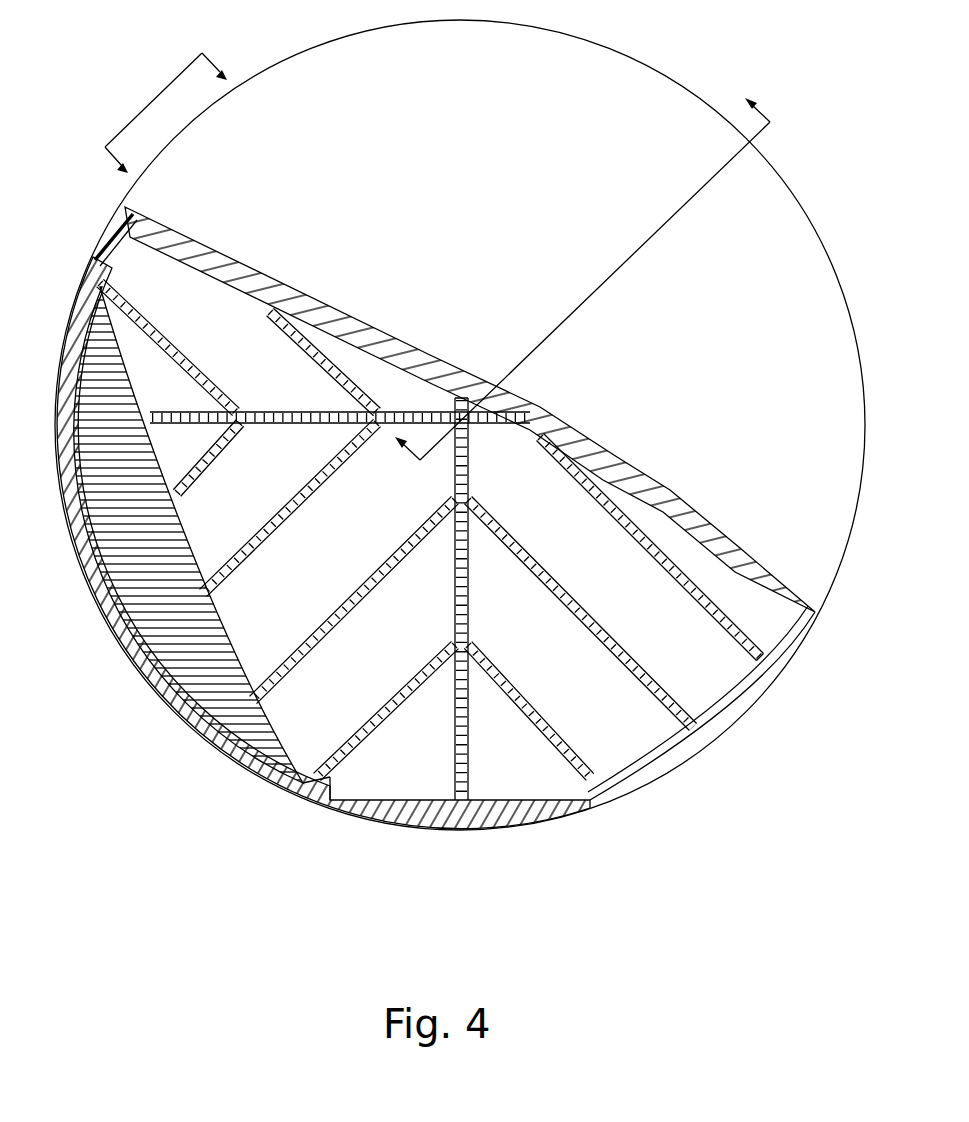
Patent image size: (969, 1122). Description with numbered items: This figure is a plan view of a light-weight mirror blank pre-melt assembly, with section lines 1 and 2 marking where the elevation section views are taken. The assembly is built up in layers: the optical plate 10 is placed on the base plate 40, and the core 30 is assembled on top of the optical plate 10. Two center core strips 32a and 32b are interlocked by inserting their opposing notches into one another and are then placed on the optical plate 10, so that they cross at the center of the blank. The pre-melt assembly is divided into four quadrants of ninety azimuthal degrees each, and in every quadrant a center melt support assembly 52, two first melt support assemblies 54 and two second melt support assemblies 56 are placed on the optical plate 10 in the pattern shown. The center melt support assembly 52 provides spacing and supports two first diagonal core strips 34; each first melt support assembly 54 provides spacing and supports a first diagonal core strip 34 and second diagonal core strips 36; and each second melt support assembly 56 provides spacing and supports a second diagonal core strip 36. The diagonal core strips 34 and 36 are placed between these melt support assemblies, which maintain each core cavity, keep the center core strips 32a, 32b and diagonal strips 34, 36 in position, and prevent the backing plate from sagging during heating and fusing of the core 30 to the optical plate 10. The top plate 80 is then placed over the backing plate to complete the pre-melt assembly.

The section line 1- 1 is at (587, 290).
The section line 2- 2 is at (158, 116).
The optical plate 10 is at (203, 687).
The core 30 is at (623, 467).
The center core strip 32a is at (460, 803).
The center core strip 32b is at (333, 418).
The first diagonal core strip 34 is at (760, 655).
The second diagonal core strip 36 is at (620, 790).
The base plate 40 is at (147, 663).
The center melt support assembly 52 is at (681, 642).
The first melt support assembly 54 is at (589, 698).
The second melt support assembly 56 is at (527, 775).
The top plate 80 is at (492, 213).